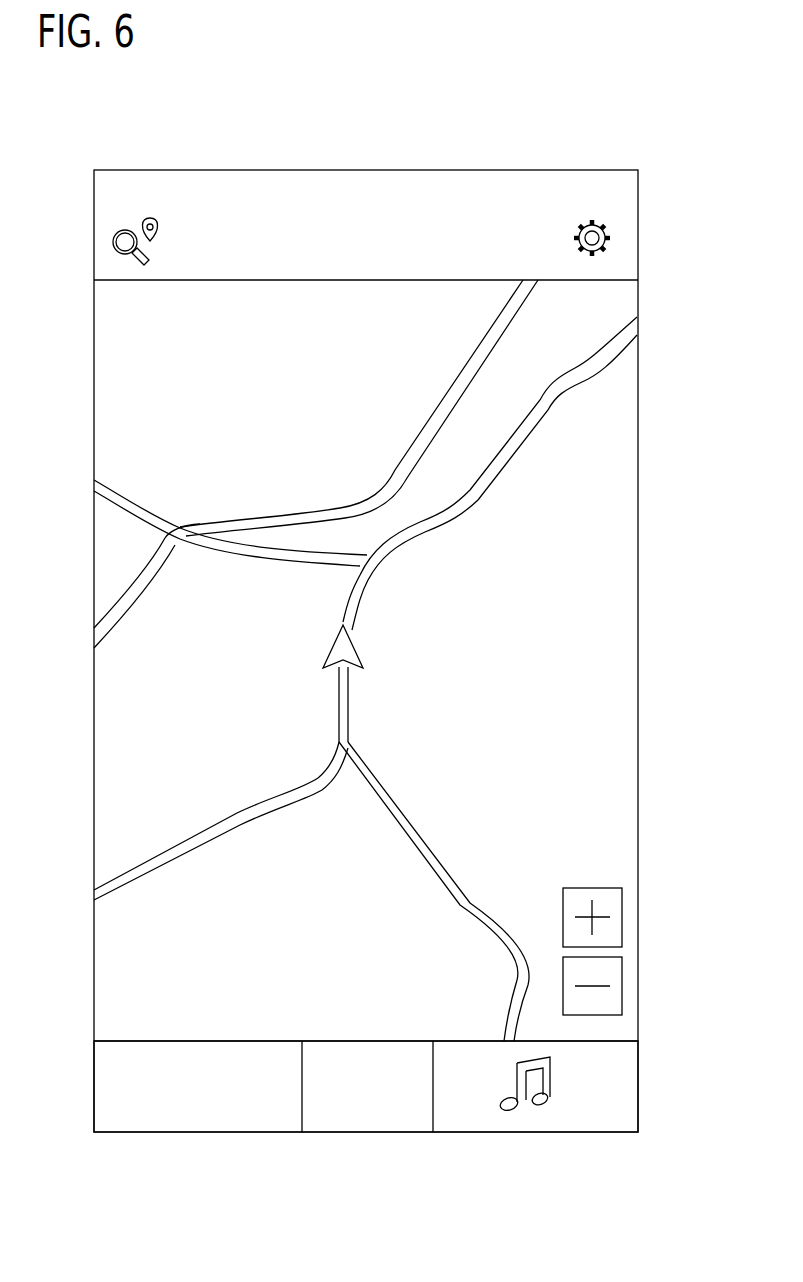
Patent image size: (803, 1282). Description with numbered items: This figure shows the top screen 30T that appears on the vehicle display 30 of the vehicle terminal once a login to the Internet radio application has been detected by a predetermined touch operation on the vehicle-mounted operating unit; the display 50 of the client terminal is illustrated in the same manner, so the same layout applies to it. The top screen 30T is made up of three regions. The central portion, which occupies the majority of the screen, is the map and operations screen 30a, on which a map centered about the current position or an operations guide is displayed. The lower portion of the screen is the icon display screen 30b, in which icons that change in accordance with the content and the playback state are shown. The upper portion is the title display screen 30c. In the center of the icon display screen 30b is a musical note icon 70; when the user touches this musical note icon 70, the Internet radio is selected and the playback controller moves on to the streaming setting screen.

The vehicle display 30 is at (324, 113).
The display 50 is at (410, 629).
The top screen 30T is at (482, 169).
The map and operations screen 30a is at (639, 450).
The icon display screen 30b is at (639, 1082).
The title display screen 30c is at (639, 238).
The musical note icon 70 is at (516, 1110).